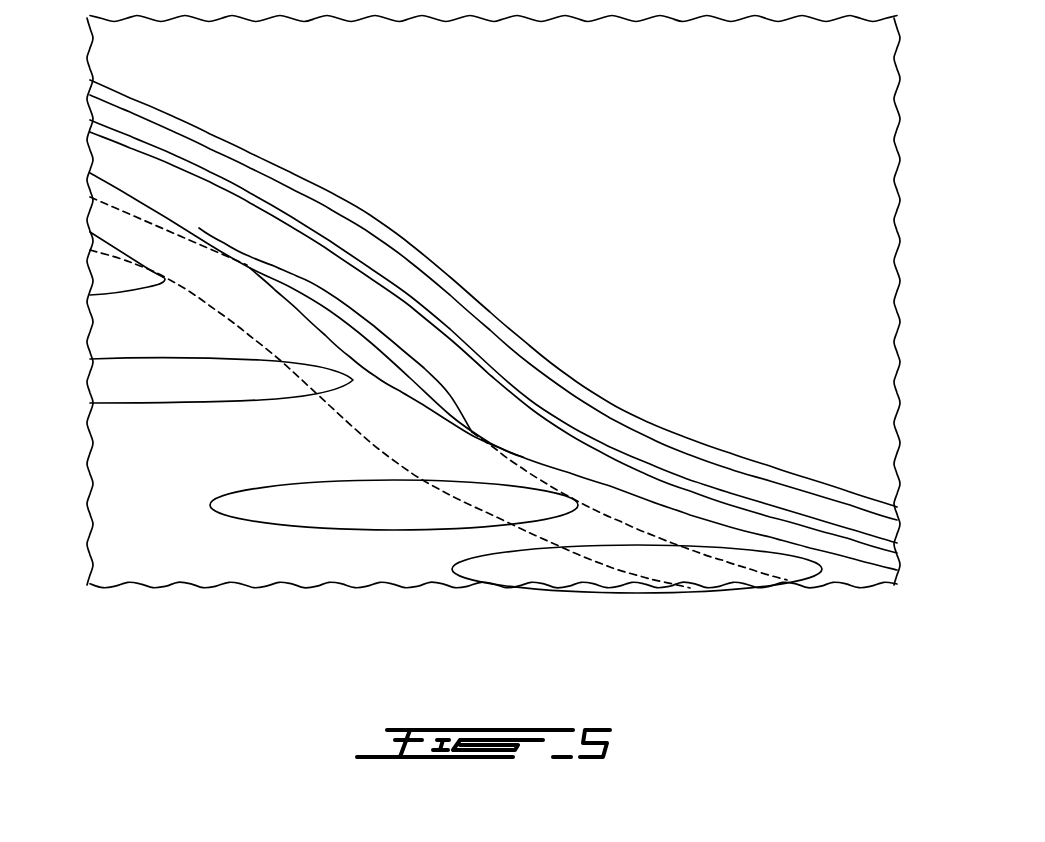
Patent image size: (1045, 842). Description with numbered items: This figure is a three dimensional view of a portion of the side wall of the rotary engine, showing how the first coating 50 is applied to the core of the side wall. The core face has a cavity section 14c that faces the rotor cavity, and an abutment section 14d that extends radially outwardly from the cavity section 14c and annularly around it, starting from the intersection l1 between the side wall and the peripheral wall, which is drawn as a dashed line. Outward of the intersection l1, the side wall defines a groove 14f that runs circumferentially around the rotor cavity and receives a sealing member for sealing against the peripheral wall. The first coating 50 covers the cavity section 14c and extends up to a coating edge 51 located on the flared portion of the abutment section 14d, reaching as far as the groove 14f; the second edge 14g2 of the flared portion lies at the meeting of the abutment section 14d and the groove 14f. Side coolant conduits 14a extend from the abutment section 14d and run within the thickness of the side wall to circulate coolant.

The first coating 50 is at (835, 210).
The intersection l1 is at (601, 393).
The coating edge 51 is at (447, 334).
The second edge 14g2 is at (338, 252).
The groove 14f is at (211, 215).
The abutment section 14d is at (128, 493).
The side coolant conduits 14a is at (162, 392).
The cavity section 14c is at (213, 556).